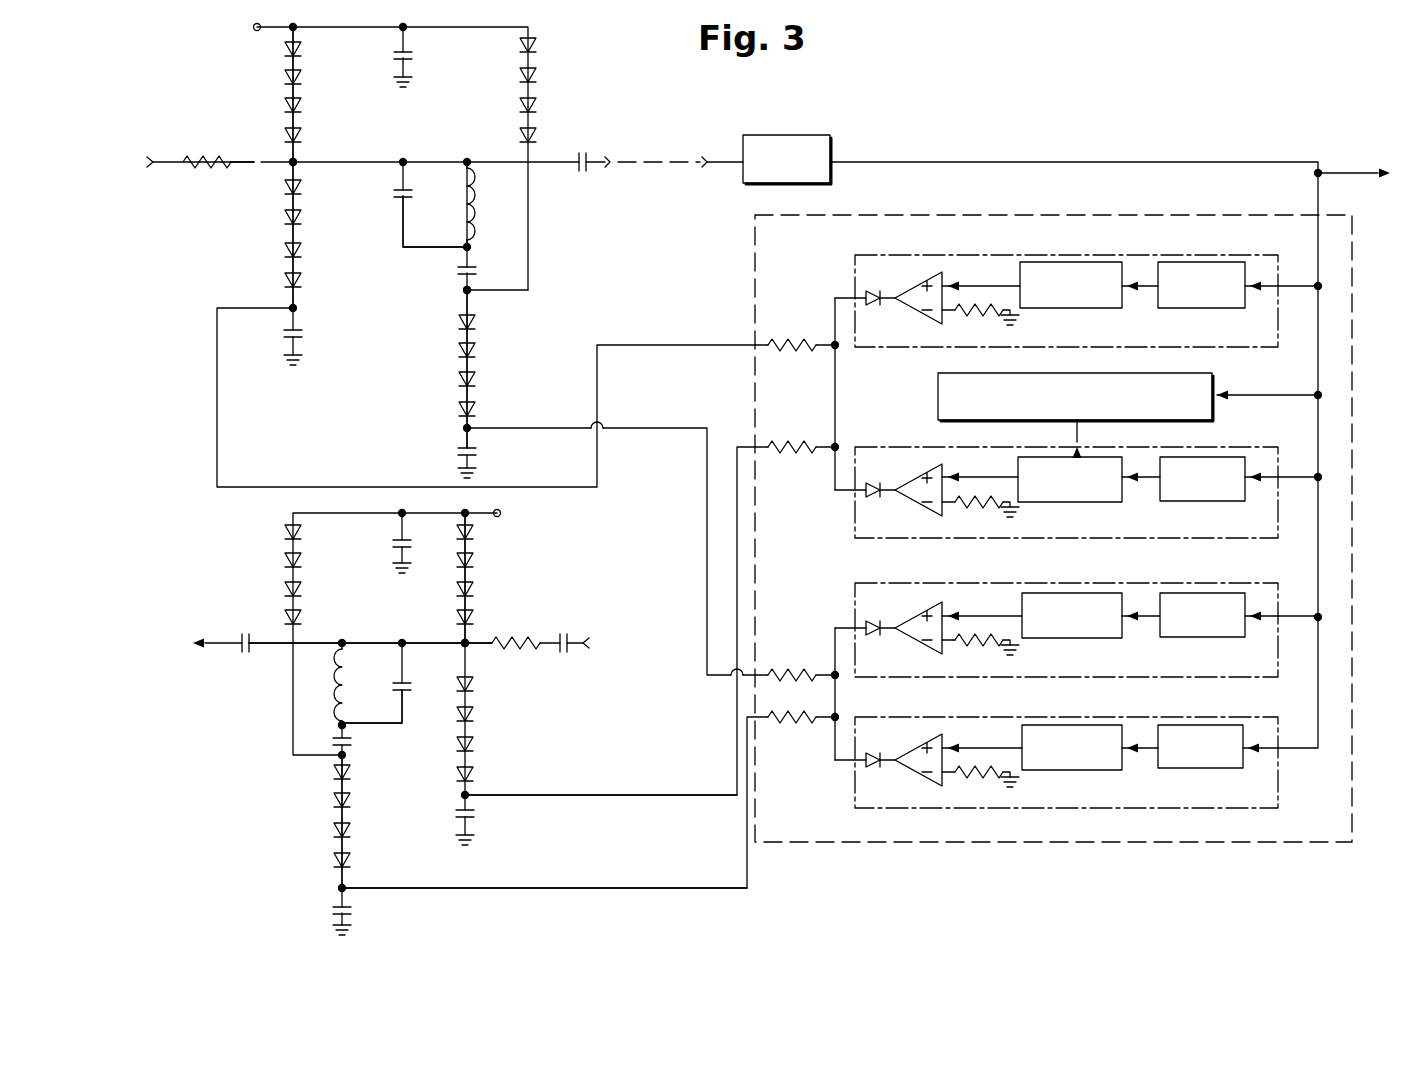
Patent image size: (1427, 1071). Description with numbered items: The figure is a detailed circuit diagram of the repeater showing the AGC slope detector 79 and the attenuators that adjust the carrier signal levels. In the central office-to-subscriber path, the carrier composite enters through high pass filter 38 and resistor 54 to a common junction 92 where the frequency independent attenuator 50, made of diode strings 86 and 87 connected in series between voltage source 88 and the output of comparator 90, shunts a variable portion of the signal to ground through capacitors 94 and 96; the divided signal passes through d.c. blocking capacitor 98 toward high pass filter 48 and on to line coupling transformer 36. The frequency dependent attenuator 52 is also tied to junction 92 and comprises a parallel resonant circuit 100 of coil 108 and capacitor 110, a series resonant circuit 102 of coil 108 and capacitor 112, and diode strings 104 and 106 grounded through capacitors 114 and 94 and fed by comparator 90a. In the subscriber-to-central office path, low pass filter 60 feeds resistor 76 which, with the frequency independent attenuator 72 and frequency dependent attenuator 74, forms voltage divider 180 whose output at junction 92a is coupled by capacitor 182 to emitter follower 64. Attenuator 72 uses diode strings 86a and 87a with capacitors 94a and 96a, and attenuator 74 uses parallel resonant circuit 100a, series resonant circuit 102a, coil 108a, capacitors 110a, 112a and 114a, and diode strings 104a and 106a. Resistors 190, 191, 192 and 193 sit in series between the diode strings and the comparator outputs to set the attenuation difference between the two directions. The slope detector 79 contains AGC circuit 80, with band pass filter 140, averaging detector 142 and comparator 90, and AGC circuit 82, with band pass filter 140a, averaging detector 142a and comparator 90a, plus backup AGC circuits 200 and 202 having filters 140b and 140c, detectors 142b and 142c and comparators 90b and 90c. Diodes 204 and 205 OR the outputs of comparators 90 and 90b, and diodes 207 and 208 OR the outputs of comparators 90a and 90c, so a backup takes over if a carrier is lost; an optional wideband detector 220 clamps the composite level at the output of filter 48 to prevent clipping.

The line coupling transformer 36 is at (1367, 167).
The high pass filter 38 is at (100, 158).
The high pass filter 48 is at (790, 134).
The frequency independent attenuator 50 is at (320, 238).
The frequency dependent attenuator 52 is at (492, 344).
The resistor 54 is at (195, 157).
The low pass filter 60 is at (621, 650).
The emitter follower 64 is at (121, 639).
The frequency independent attenuator 72 is at (455, 594).
The frequency dependent attenuator 74 is at (322, 794).
The resistor 76 is at (522, 644).
The AGC slope detector 79 is at (970, 210).
The automatic gain control circuit 80 is at (1235, 348).
The automatic gain control circuit 82 is at (1210, 581).
The diode string 86 is at (284, 104).
The diode string 87 is at (285, 214).
The voltage source 88 is at (255, 32).
The comparator 90 is at (917, 310).
The comparator 90a is at (917, 640).
The comparator 90b is at (917, 502).
The comparator 90c is at (917, 772).
The common junction 92 is at (297, 160).
The capacitor 94 is at (411, 54).
The capacitor 96 is at (303, 332).
The d.c. blocking capacitor 98 is at (587, 171).
The parallel resonant circuit 100 is at (418, 255).
The series resonant circuit 102 is at (484, 262).
The diode string 104 is at (460, 355).
The diode string 106 is at (535, 105).
The coil 108 is at (480, 190).
The capacitor 110 is at (395, 195).
The capacitor 112 is at (460, 275).
The capacitor 114 is at (458, 448).
The band pass filter 140 is at (1235, 308).
The band pass filter 140a is at (1225, 638).
The band pass filter 140b is at (1230, 502).
The band pass filter 140c is at (1220, 771).
The averaging detector 142 is at (1120, 308).
The averaging detector 142a is at (1118, 643).
The averaging detector 142b is at (1118, 505).
The averaging detector 142c is at (1118, 774).
The voltage divider 180 is at (489, 620).
The d.c. blocking capacitor 182 is at (240, 640).
The resistor 190 is at (803, 338).
The resistor 191 is at (803, 444).
The resistor 192 is at (805, 673).
The resistor 193 is at (788, 721).
The backup AGC circuit 200 is at (1242, 446).
The backup AGC circuit 202 is at (1195, 715).
The diode 204 is at (872, 292).
The diode 205 is at (872, 482).
The diode 207 is at (874, 622).
The diode 208 is at (872, 752).
The wideband detector 220 is at (937, 377).
The diode string 86a is at (470, 596).
The diode string 87a is at (472, 740).
The common junction 92a is at (462, 642).
The capacitor 94a is at (395, 548).
The capacitor 96a is at (460, 815).
The parallel resonant circuit 100a is at (417, 695).
The series resonant circuit 102a is at (360, 747).
The diode string 104a is at (335, 828).
The diode string 106a is at (287, 565).
The coil 108a is at (348, 698).
The capacitor 110a is at (400, 682).
The capacitor 112a is at (334, 739).
The capacitor 114a is at (335, 908).